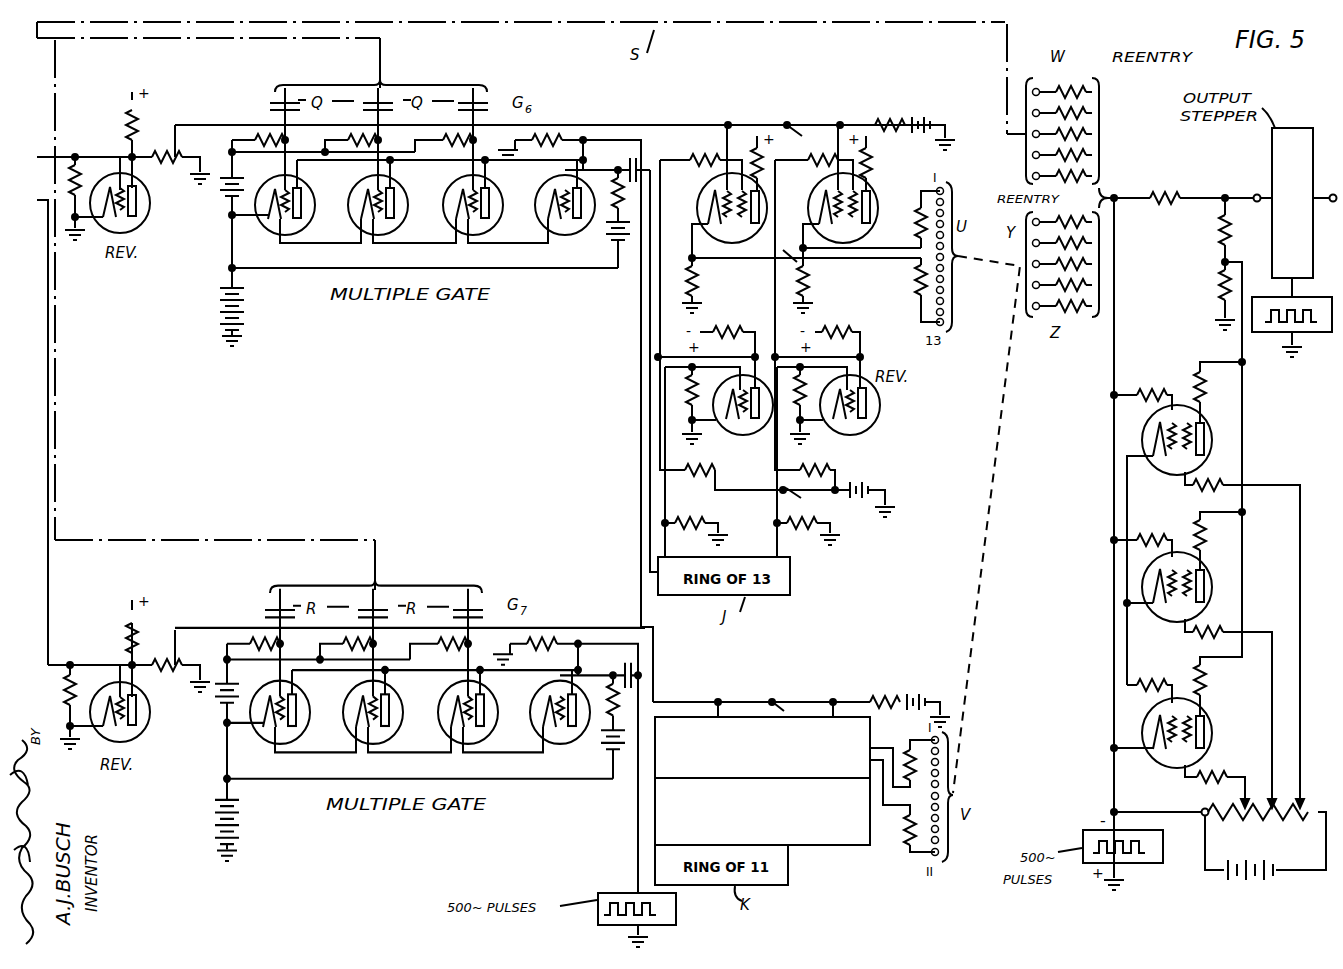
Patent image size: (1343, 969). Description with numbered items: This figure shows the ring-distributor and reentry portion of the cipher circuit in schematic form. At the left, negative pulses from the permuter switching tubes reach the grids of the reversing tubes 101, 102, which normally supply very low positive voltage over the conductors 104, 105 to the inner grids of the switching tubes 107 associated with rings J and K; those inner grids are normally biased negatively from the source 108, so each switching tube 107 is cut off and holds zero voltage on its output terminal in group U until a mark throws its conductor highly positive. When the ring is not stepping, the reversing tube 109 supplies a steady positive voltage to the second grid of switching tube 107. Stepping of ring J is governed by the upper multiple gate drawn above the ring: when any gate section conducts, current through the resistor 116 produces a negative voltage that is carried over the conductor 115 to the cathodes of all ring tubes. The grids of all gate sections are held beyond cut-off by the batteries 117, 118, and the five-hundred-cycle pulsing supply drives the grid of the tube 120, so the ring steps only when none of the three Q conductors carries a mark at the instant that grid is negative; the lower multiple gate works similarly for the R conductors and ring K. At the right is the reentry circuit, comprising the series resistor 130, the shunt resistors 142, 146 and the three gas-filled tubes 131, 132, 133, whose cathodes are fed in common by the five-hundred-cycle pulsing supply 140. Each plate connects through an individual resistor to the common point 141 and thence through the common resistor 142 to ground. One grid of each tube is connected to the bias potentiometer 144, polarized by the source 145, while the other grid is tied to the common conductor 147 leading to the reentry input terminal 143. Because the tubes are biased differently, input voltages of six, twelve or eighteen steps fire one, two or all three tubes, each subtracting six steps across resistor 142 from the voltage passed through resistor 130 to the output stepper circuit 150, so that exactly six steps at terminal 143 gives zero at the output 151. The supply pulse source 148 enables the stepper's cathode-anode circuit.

The reversing tube 101 is at (126, 180).
The reversing tube 102 is at (126, 688).
The conductor 104 is at (664, 125).
The conductor 105 is at (654, 681).
The switching tube 107 is at (703, 200).
The source 108 is at (918, 118).
The reversing tube 109 is at (748, 433).
The conductor 115 is at (592, 140).
The resistor 116 is at (545, 136).
The battery 117 is at (218, 186).
The battery 118 is at (624, 240).
The tube 120 is at (580, 232).
The series resistor 130 is at (1186, 174).
The gas-filled tube 131 is at (1168, 775).
The gas-filled tube 132 is at (1168, 619).
The gas-filled tube 133 is at (1168, 472).
The 500-cycle pulsing supply 140 is at (1158, 864).
The common point 141 is at (1243, 457).
The shunt resistor 142 is at (1218, 290).
The reentry input terminal 143 is at (1110, 195).
The bias potentiometer 144 is at (1256, 826).
The polarizing source 145 is at (1253, 860).
The shunt resistor 146 is at (1219, 245).
The common conductor 147 is at (1116, 375).
The supply pulse source 148 is at (1328, 340).
The output stepper circuit 150 is at (1306, 128).
The output 151 is at (1257, 194).